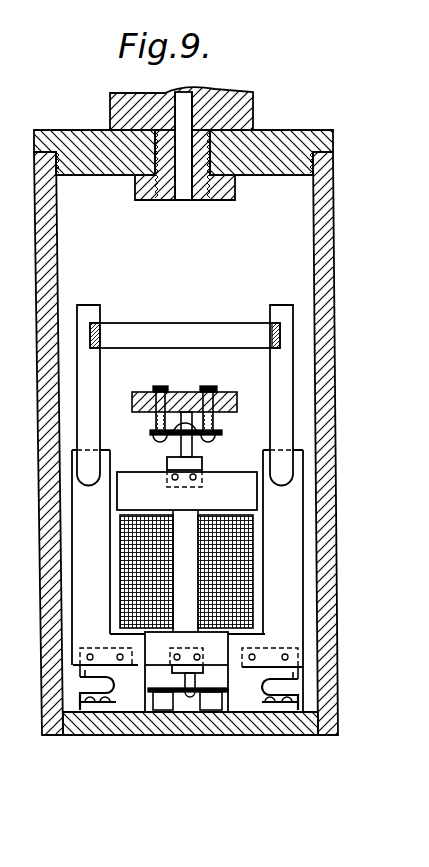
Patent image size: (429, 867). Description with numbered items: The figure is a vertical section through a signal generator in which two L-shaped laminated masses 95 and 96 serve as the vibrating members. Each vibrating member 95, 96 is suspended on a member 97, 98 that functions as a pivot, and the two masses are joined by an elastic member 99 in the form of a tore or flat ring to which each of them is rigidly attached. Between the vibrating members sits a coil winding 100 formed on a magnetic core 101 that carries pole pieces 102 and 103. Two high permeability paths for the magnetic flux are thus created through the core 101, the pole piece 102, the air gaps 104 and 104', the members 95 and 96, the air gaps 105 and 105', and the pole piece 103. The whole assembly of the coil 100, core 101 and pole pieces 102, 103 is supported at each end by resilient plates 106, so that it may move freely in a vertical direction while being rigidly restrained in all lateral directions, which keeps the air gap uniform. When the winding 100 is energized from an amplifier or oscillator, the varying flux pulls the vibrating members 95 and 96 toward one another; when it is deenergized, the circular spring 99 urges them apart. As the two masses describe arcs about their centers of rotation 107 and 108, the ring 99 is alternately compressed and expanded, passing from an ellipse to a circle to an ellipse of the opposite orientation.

The L-shaped laminated mass 95 is at (287, 565).
The L-shaped laminated mass 96 is at (85, 576).
The pivot member 97 is at (292, 676).
The pivot member 98 is at (92, 674).
The elastic member 99 is at (210, 318).
The coil winding 100 is at (238, 552).
The magnetic core 101 is at (188, 578).
The pole piece 102 is at (220, 651).
The pole piece 103 is at (253, 493).
The air gap 104 is at (255, 707).
The air gap 104' is at (113, 707).
The air gap 105 is at (236, 414).
The air gap 105' is at (135, 427).
The resilient plate 106 is at (195, 437).
The center of rotation 107 is at (250, 697).
The center of rotation 108 is at (123, 697).